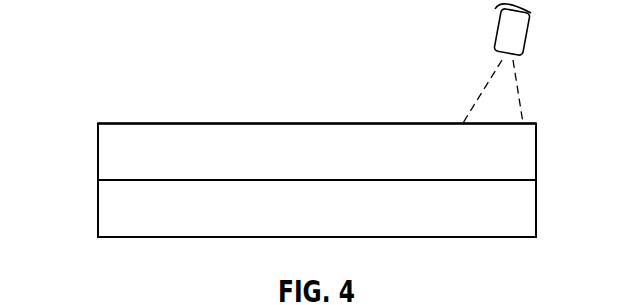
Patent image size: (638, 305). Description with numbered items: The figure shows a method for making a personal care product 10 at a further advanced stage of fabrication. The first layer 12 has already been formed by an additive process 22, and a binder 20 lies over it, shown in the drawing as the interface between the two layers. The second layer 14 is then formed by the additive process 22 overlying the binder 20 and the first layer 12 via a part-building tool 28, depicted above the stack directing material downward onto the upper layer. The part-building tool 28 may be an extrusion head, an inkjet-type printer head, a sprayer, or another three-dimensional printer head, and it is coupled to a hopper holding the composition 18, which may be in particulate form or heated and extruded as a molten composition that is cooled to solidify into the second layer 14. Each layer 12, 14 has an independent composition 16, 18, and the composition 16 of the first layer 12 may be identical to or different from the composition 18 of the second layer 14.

The personal care product 10 is at (86, 72).
The first layer 12 is at (523, 207).
The second layer 14 is at (523, 157).
The composition 16 is at (110, 206).
The composition 18 is at (110, 160).
The binder 20 is at (210, 180).
The additive process 22 is at (531, 13).
The part-building tool 28 is at (499, 20).